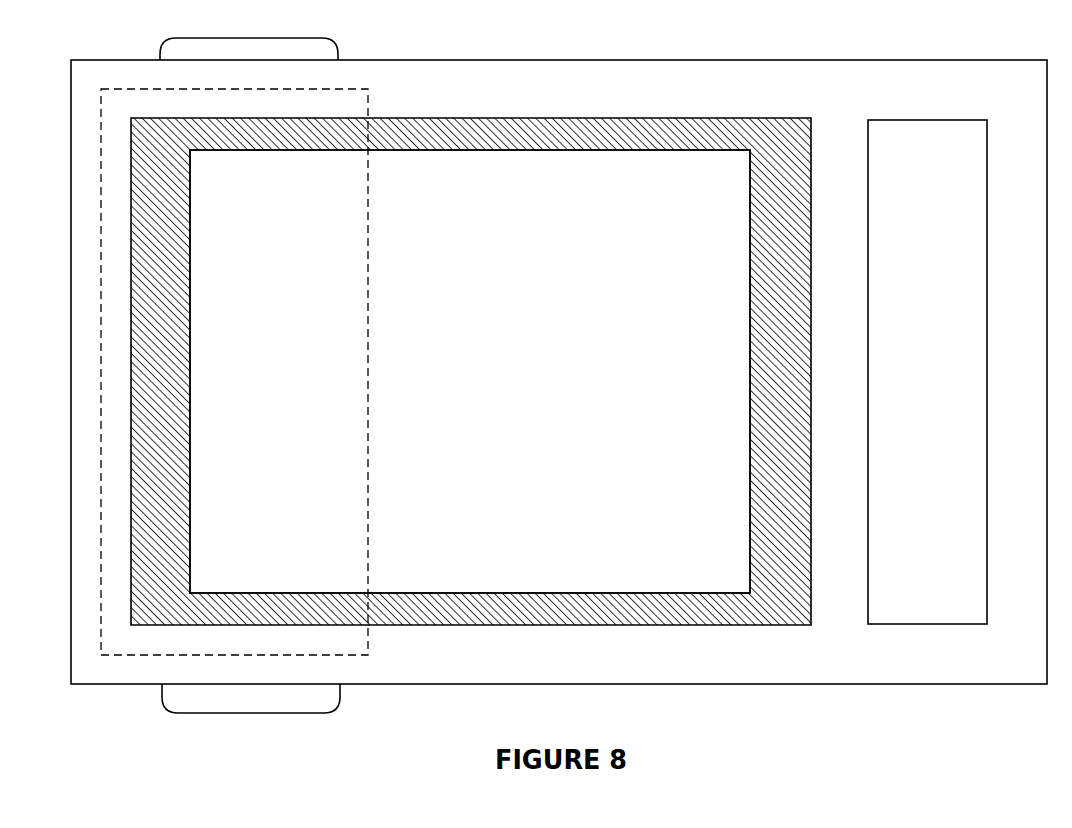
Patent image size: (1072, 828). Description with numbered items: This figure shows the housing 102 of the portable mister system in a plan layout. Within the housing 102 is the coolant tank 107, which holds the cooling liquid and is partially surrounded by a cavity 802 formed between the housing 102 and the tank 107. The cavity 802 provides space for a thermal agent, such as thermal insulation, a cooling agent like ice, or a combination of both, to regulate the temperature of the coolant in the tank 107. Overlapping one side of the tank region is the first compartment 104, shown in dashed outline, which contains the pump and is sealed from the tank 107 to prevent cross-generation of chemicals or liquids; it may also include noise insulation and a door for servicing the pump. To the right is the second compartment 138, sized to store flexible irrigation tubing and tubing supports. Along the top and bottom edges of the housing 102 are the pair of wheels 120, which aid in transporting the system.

The housing 102 is at (323, 35).
The first compartment 104 is at (351, 262).
The coolant tank 107 is at (628, 251).
The wheels 120 is at (341, 698).
The second compartment 138 is at (978, 156).
The cavity 802 is at (801, 136).